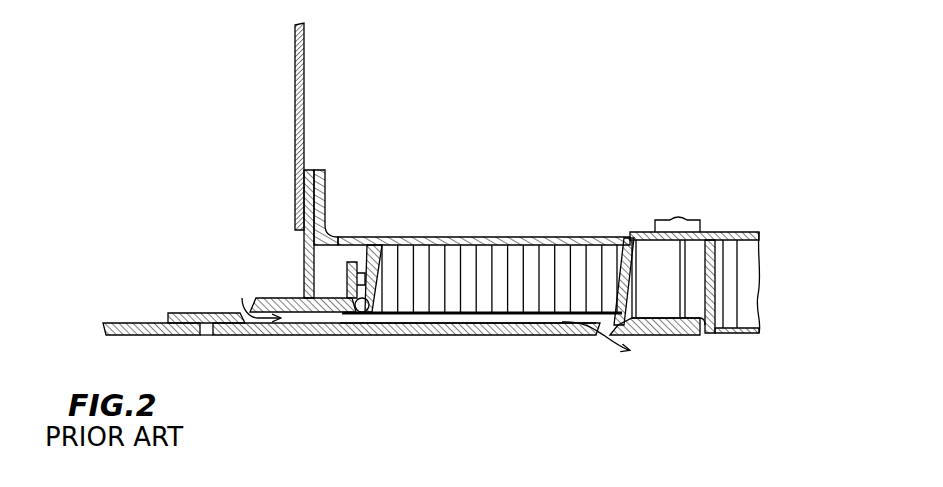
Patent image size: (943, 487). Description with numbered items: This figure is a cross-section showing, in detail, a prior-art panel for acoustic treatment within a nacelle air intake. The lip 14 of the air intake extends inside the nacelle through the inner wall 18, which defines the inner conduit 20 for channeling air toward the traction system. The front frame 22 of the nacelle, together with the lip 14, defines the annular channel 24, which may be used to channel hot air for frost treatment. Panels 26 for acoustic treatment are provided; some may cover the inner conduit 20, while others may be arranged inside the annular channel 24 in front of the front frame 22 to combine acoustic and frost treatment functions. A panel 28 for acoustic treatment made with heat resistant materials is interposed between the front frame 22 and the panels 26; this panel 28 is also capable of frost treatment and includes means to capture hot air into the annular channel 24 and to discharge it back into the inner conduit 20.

The lip 14 is at (118, 337).
The inner wall 18 is at (457, 336).
The inner conduit 20 is at (479, 378).
The front frame 22 is at (304, 72).
The annular channel 24 is at (273, 244).
The panels for acoustic treatment 26 is at (730, 248).
The panel for acoustic treatment with heat resistant materials 28 is at (500, 247).